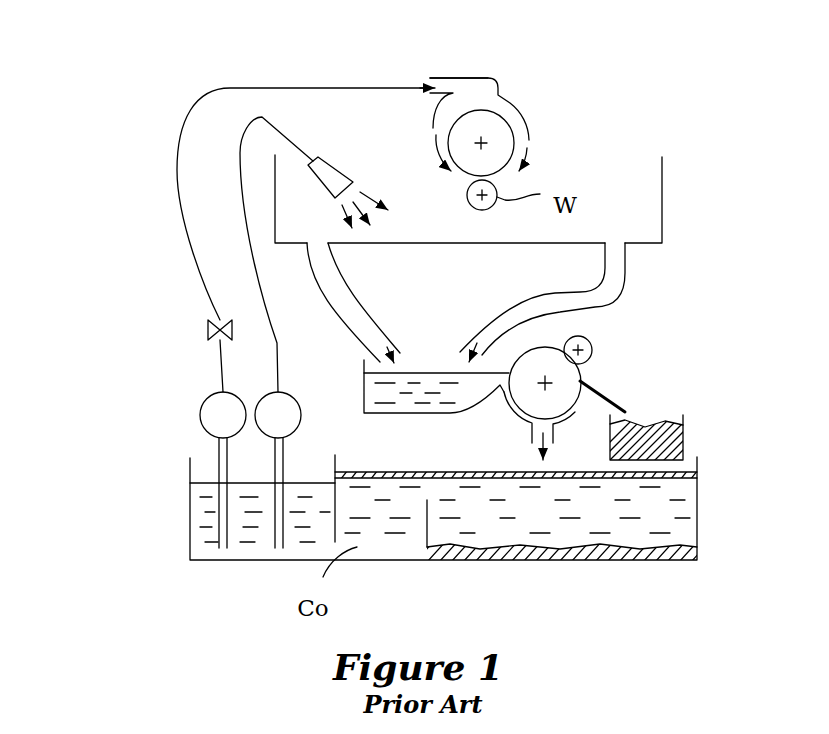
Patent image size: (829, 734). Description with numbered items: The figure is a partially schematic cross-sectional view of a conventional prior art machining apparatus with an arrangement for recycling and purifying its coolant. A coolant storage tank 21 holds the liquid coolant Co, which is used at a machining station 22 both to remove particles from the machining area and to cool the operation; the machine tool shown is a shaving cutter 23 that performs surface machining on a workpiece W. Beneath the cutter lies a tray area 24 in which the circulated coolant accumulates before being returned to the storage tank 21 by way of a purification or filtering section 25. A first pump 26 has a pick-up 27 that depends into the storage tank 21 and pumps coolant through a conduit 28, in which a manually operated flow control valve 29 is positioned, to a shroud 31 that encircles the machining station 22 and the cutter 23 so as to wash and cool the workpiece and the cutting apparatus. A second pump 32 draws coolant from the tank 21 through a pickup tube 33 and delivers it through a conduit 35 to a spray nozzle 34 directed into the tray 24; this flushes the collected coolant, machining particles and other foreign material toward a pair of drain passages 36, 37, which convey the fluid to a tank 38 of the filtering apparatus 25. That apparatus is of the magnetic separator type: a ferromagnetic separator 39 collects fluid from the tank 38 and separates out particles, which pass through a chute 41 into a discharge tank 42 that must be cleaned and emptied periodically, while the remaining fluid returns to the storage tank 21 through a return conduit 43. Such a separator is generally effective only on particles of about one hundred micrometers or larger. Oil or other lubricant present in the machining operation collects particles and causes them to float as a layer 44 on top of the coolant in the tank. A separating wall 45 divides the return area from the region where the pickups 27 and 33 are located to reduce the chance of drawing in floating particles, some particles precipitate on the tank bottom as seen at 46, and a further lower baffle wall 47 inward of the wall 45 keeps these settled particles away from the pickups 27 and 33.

The coolant storage tank 21 is at (190, 543).
The machining station 22 is at (525, 96).
The shaving cutter 23 is at (513, 121).
The tray area 24 is at (423, 245).
The purification or filtering section 25 is at (665, 354).
The first pump 26 is at (200, 405).
The pick-up 27 is at (217, 448).
The conduit 28 is at (175, 193).
The manually operated flow control valve 29 is at (206, 337).
The shroud 31 is at (478, 77).
The second pump 32 is at (300, 403).
The pickup tube 33 is at (283, 473).
The spray nozzle 34 is at (337, 163).
The conduit 35 is at (255, 275).
The drain passage 36 is at (342, 317).
The drain passage 37 is at (530, 292).
The tank 38 is at (437, 409).
The ferromagnetic separator 39 is at (598, 345).
The chute 41 is at (612, 398).
The discharge tank 42 is at (683, 438).
The return conduit 43 is at (553, 435).
The floating layer 44 is at (698, 470).
The separating wall 45 is at (336, 461).
The precipitated particles 46 is at (542, 562).
The lower baffle wall 47 is at (427, 533).